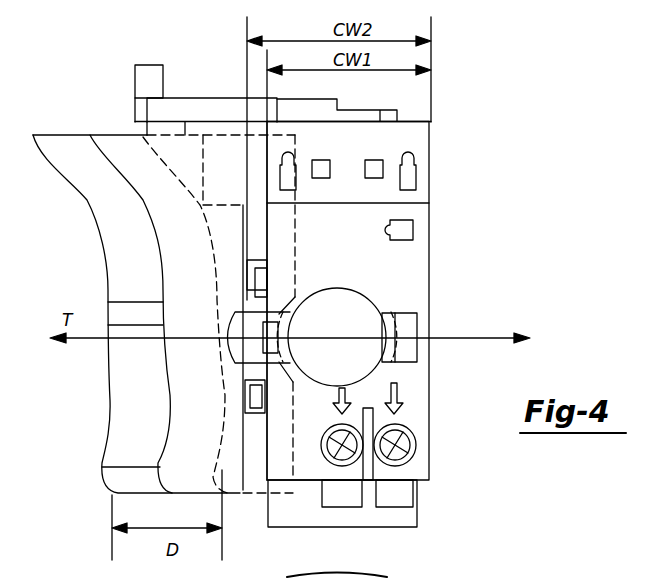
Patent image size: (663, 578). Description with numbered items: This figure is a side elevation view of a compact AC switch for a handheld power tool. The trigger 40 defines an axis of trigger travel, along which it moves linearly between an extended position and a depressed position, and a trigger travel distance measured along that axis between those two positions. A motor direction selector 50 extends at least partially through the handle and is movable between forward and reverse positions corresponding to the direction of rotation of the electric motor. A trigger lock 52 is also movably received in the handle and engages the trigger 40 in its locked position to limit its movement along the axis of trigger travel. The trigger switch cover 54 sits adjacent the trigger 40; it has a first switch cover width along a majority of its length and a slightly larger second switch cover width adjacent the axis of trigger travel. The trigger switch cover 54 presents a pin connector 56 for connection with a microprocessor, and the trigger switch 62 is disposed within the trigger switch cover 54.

The trigger 40 is at (198, 258).
The motor direction selector 50 is at (208, 106).
The trigger lock 52 is at (358, 306).
The trigger switch cover 54 is at (418, 252).
The pin connector 56 is at (397, 515).
The trigger switch 62 is at (465, 192).